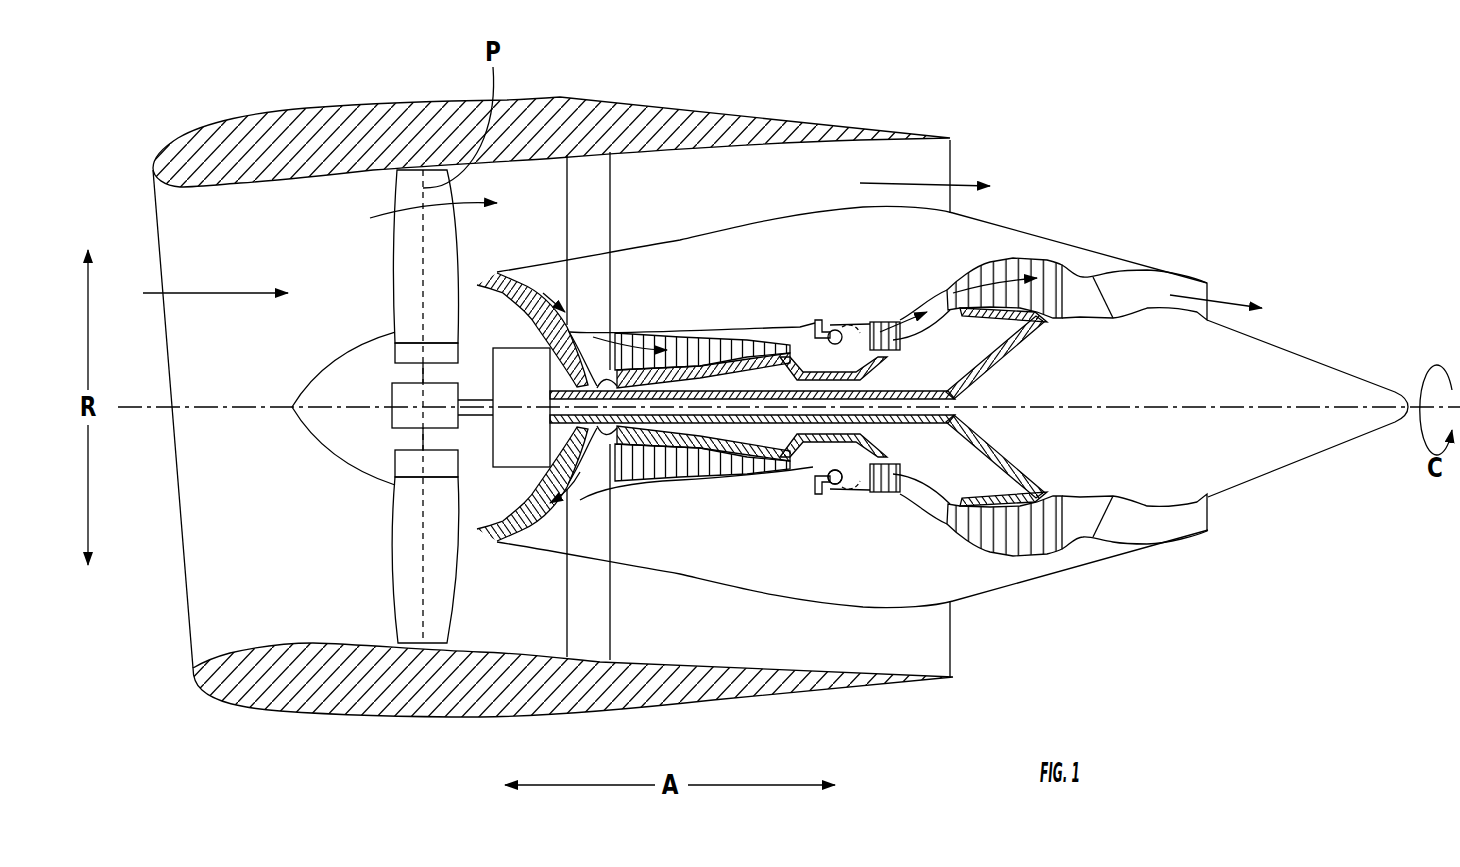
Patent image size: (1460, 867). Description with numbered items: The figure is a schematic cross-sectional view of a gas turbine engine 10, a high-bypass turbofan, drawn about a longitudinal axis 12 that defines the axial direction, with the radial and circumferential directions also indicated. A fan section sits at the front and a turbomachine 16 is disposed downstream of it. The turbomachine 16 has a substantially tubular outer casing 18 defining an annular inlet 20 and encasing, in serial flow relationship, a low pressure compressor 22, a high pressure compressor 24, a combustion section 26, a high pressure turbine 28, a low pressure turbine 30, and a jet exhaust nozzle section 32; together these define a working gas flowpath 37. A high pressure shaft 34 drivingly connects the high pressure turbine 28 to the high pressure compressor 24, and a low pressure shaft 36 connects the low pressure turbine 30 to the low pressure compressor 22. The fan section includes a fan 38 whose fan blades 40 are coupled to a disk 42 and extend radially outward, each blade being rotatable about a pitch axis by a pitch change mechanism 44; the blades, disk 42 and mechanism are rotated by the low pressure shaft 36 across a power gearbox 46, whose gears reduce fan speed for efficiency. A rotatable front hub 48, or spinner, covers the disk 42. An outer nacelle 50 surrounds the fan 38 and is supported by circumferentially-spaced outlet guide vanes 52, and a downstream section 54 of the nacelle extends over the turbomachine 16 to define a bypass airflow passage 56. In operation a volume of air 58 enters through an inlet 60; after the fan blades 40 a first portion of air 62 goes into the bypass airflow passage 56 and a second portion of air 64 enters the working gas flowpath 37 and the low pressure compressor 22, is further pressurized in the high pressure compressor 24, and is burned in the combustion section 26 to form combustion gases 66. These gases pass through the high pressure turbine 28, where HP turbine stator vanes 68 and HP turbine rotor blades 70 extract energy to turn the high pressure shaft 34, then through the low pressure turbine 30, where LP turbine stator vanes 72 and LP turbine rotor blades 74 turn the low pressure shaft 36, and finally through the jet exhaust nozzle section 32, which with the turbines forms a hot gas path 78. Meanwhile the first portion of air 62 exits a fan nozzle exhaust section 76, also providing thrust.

The gas turbine engine 10 is at (1115, 110).
The longitudinal axis 12 is at (1142, 393).
The turbomachine 16 is at (353, 190).
The outer casing 18 is at (790, 597).
The annular inlet 20 is at (500, 527).
The low pressure compressor 22 is at (557, 493).
The high pressure compressor 24 is at (643, 467).
The combustion section 26 is at (835, 488).
The high pressure turbine 28 is at (909, 485).
The low pressure turbine 30 is at (1037, 562).
The jet exhaust nozzle section 32 is at (1110, 540).
The high pressure shaft 34 is at (847, 373).
The low pressure shaft 36 is at (902, 390).
The working gas flowpath 37 is at (593, 473).
The fan 38 is at (357, 465).
The fan blades 40 is at (393, 558).
The disk 42 is at (413, 353).
The pitch change mechanism 44 is at (390, 387).
The power gearbox 46 is at (537, 360).
The front hub 48 is at (303, 427).
The outer nacelle 50 is at (443, 718).
The outlet guide vanes 52 is at (608, 205).
The downstream section 54 is at (890, 128).
The bypass airflow passage 56 is at (797, 192).
The volume of air 58 is at (220, 290).
The inlet 60 is at (190, 650).
The first portion of air 62 is at (425, 188).
The second portion of air 64 is at (478, 284).
The combustion gases 66 is at (1000, 263).
The HP turbine stator vanes 68 is at (853, 493).
The HP turbine rotor blades 70 is at (873, 490).
The LP turbine stator vanes 72 is at (957, 527).
The LP turbine rotor blades 74 is at (970, 537).
The fan nozzle exhaust section 76 is at (940, 167).
The hot gas path 78 is at (935, 302).